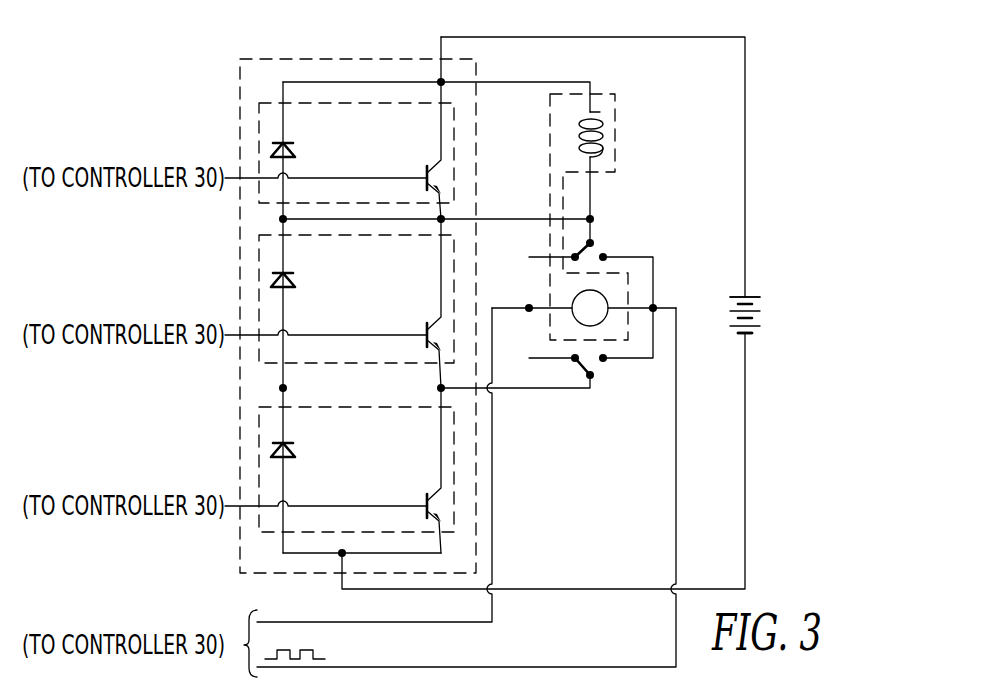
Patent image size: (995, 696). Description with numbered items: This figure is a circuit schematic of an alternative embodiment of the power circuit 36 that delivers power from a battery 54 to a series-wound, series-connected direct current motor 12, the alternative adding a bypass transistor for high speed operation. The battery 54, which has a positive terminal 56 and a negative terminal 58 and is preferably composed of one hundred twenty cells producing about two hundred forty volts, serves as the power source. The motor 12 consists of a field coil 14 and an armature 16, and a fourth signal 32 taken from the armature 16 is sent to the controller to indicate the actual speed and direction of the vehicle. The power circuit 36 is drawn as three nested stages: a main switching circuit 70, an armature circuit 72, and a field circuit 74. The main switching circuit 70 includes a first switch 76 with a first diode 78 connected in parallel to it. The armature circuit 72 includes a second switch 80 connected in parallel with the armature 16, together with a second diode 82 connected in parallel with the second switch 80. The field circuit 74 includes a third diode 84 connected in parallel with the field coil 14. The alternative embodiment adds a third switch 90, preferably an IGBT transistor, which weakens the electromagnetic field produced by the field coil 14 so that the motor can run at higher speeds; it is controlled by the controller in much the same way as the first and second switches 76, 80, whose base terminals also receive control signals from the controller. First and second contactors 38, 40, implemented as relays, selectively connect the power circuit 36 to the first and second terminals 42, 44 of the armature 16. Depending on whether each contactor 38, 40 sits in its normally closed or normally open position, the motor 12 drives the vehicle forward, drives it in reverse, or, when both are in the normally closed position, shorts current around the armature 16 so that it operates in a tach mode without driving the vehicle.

The direct current motor 12 is at (607, 94).
The field coil 14 is at (604, 131).
The armature 16 is at (608, 302).
The fourth signal 32 is at (312, 650).
The power circuit 36 is at (292, 58).
The first contactor 38 is at (596, 250).
The second contactor 40 is at (594, 372).
The first terminal 42 is at (528, 311).
The second terminal 44 is at (656, 306).
The battery 54 is at (758, 318).
The positive terminal 56 is at (746, 296).
The negative terminal 58 is at (750, 336).
The main switching circuit 70 is at (265, 407).
The armature circuit 72 is at (265, 235).
The field circuit 74 is at (265, 103).
The first switch 76 is at (424, 500).
The first diode 78 is at (298, 451).
The second switch 80 is at (424, 329).
The second diode 82 is at (298, 281).
The third diode 84 is at (298, 151).
The third switch 90 is at (424, 171).